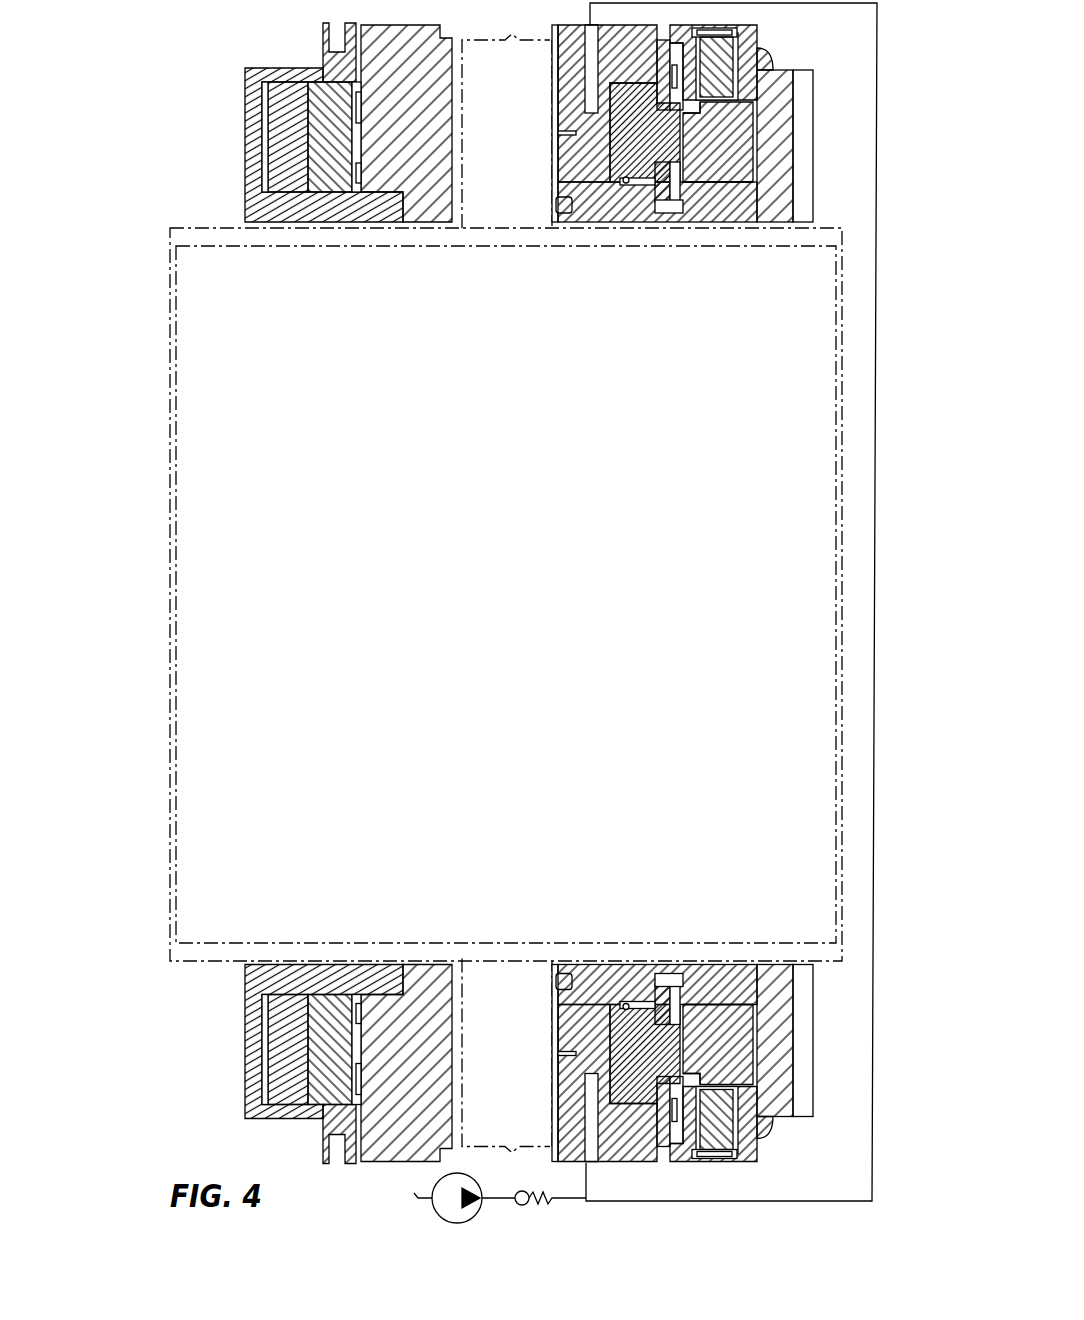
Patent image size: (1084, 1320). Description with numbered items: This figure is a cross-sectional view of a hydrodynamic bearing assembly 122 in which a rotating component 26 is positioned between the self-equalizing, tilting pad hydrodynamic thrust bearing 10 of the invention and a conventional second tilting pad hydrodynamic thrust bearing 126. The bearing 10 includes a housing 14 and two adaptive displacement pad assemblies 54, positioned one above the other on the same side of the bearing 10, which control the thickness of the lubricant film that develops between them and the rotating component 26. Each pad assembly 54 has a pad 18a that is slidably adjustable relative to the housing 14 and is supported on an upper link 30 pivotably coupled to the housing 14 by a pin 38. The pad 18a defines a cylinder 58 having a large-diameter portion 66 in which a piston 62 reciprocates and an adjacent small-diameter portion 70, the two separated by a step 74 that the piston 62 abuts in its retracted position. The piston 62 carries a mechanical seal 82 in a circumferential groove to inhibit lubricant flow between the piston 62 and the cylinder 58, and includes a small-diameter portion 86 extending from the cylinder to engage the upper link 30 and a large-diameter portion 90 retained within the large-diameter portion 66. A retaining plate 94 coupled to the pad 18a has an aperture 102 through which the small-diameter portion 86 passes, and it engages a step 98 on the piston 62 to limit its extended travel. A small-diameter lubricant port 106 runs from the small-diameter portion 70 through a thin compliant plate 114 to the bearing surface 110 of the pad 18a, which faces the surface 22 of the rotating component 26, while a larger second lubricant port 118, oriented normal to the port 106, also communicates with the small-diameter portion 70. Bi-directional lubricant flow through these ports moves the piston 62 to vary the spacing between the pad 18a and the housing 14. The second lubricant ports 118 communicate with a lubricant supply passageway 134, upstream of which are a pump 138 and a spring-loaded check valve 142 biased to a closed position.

The self-equalizing hydrodynamic thrust bearing 10 is at (866, 168).
The housing 14 is at (780, 90).
The pad 18a is at (570, 55).
The surface 22 is at (570, 185).
The rotating component 26 is at (462, 1147).
The upper link 30 is at (742, 135).
The pin 38 is at (722, 50).
The adaptive displacement pad assembly 54 is at (528, 33).
The cylinder 58 is at (638, 83).
The piston 62 is at (623, 146).
The large-diameter portion 66 is at (643, 180).
The small-diameter portion 70 is at (565, 205).
The step 74 is at (618, 83).
The mechanical seal 82 is at (627, 186).
The small-diameter portion 86 is at (680, 165).
The large-diameter portion 90 is at (623, 184).
The retaining plate 94 is at (668, 42).
The step 98 is at (667, 183).
The aperture 102 is at (672, 103).
The lubricant port 106 is at (565, 143).
The bearing surface 110 is at (556, 76).
The compliant plate 114 is at (557, 100).
The second lubricant port 118 is at (590, 50).
The hydrodynamic bearing assembly 122 is at (158, 86).
The second tilting pad hydrodynamic thrust bearing 126 is at (220, 176).
The lubricant supply passageway 134 is at (878, 706).
The pump 138 is at (445, 1222).
The spring-loaded check valve 142 is at (524, 1206).